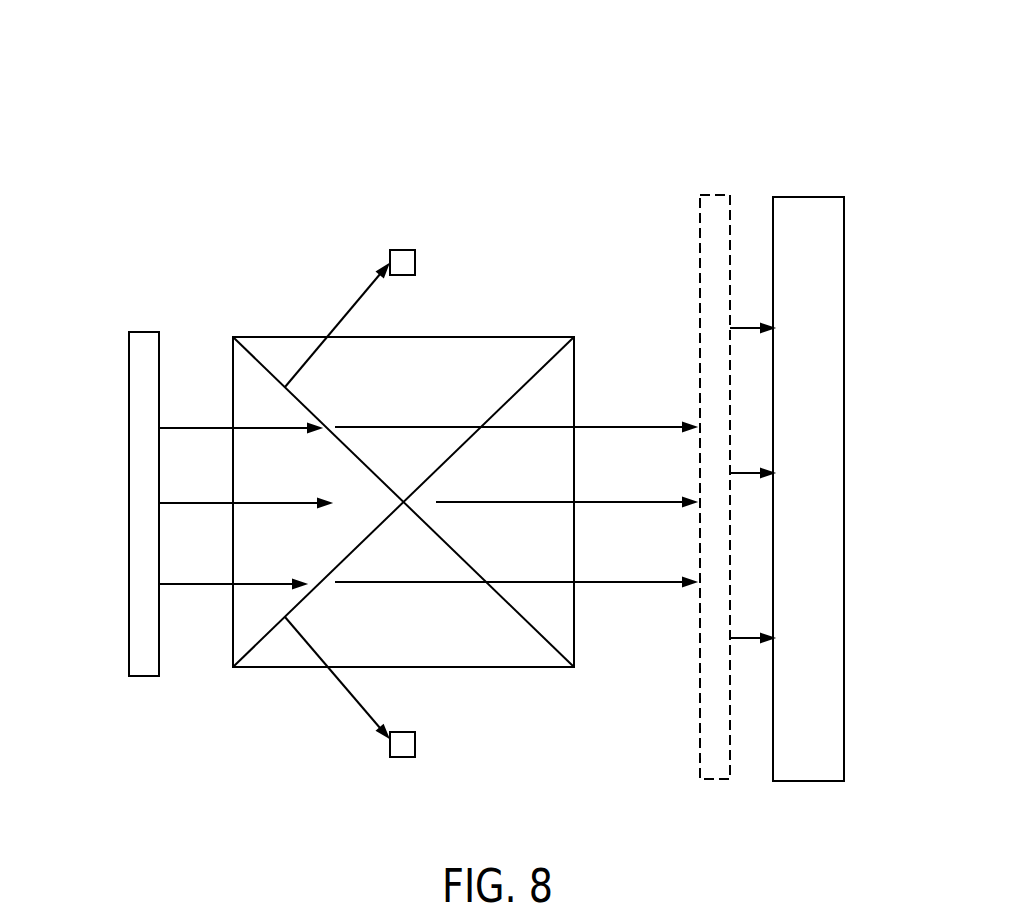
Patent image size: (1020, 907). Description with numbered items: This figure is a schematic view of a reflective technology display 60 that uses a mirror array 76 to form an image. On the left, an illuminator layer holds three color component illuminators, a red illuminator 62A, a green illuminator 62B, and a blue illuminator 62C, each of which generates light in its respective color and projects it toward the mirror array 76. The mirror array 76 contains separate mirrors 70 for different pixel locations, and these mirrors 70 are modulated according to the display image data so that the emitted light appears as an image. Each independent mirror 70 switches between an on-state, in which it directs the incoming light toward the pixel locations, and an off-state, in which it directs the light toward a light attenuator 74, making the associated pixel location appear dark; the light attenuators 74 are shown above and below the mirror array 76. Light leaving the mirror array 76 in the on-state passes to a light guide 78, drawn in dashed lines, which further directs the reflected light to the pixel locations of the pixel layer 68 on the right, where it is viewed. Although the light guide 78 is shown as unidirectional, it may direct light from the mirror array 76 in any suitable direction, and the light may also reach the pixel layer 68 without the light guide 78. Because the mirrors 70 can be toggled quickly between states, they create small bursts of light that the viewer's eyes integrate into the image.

The reflective technology display 60 is at (819, 93).
The red illuminator 62A is at (129, 428).
The green illuminator 62B is at (129, 502).
The blue illuminator 62C is at (129, 583).
The pixel layer 68 is at (808, 197).
The mirrors 70 is at (518, 392).
The light attenuator 74 is at (403, 250).
The mirror array 76 is at (574, 607).
The light guide 78 is at (705, 195).